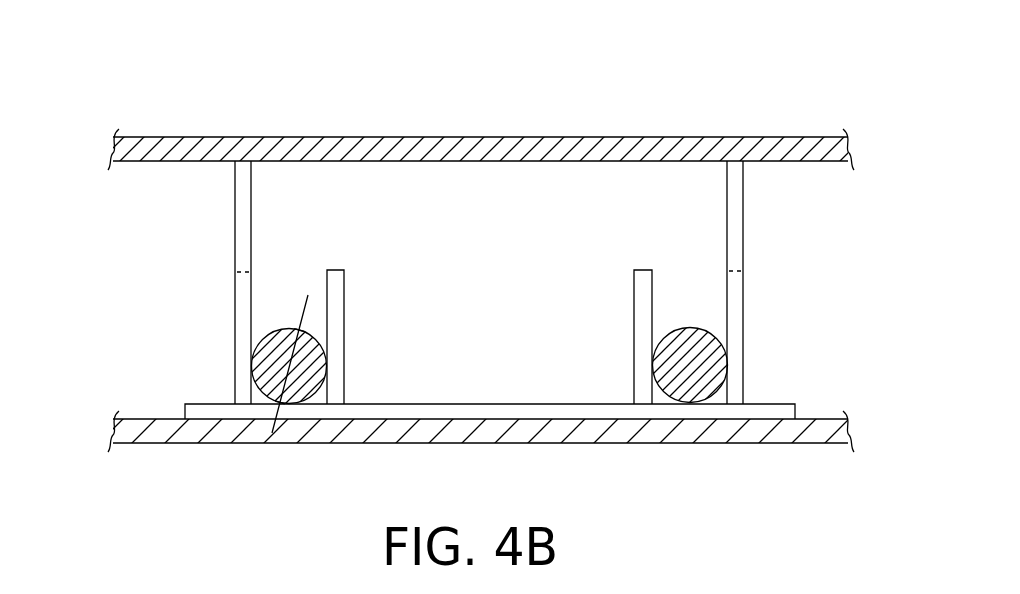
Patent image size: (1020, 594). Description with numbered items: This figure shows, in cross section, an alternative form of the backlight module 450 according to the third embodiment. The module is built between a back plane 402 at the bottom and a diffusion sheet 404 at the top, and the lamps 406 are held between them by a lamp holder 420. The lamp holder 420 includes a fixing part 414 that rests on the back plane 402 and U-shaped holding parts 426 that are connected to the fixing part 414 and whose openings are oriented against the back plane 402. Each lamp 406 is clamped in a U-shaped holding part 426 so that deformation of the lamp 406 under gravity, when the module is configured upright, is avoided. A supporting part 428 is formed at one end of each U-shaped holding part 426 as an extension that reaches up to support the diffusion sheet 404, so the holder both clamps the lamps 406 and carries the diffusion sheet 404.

The backlight module 450 is at (167, 87).
The diffusion sheet 404 is at (715, 137).
The back plane 402 is at (753, 443).
The lamp holder 420 is at (156, 315).
The fixing part 414 is at (767, 403).
The supporting part 428 is at (243, 217).
The U-shaped holding part 426 is at (345, 335).
The lamp 406 is at (257, 359).